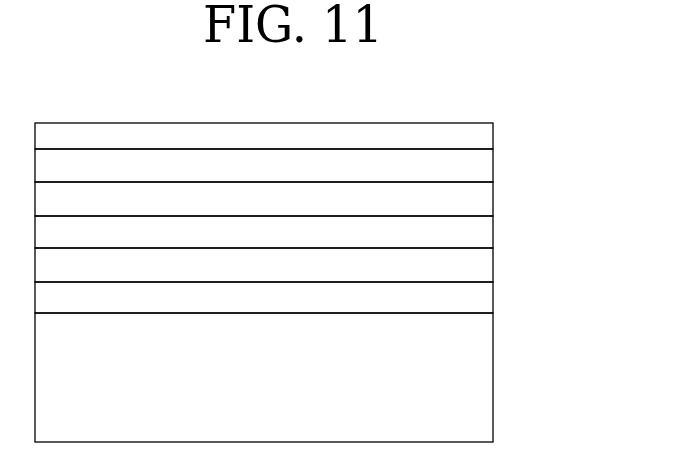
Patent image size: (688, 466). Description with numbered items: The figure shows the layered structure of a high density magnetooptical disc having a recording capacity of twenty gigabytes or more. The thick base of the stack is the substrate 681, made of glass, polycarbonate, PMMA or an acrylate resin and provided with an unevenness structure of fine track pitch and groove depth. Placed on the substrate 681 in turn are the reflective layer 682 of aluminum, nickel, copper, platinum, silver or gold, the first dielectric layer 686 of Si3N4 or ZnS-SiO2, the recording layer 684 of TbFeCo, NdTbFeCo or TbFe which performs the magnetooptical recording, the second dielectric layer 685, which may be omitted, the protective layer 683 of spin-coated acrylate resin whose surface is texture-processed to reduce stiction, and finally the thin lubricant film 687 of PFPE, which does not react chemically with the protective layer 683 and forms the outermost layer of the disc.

The substrate 681 is at (482, 385).
The reflective layer 682 is at (480, 297).
The protective layer 683 is at (480, 163).
The recording layer 684 is at (480, 233).
The second dielectric layer 685 is at (480, 198).
The first dielectric layer 686 is at (480, 265).
The lubricant film 687 is at (478, 133).